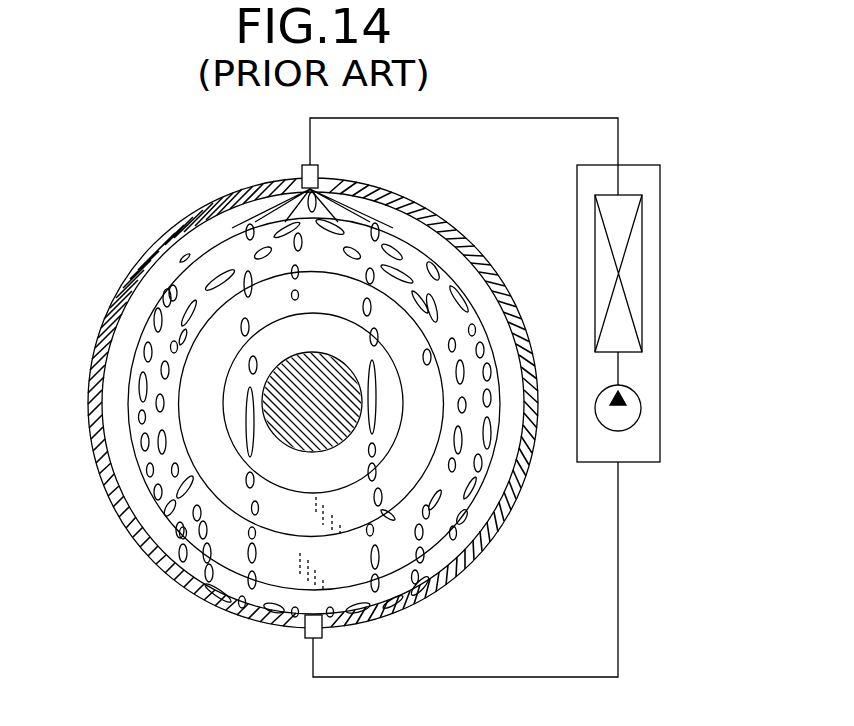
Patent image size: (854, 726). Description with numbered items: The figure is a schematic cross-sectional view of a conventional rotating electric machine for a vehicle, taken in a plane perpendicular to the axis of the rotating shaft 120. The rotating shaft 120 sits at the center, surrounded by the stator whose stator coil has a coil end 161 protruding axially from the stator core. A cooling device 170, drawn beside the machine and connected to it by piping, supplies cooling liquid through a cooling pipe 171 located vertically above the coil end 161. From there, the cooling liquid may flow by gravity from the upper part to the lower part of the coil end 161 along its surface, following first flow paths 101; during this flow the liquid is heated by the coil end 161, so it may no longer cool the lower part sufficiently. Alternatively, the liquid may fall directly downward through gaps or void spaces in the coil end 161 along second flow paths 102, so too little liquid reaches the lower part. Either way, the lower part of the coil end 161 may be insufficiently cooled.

The first flow paths 101 is at (157, 495).
The second flow paths 102 is at (248, 510).
The rotating shaft 120 is at (281, 362).
The coil end 161 is at (197, 288).
The cooling device 170 is at (661, 247).
The cooling pipe 171 is at (300, 172).